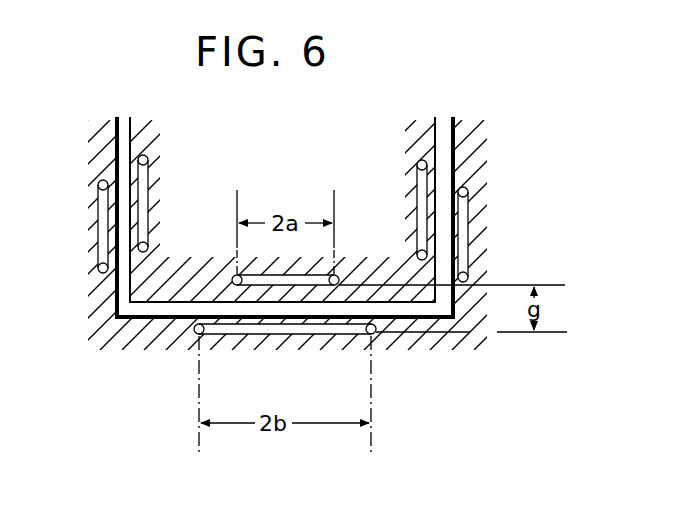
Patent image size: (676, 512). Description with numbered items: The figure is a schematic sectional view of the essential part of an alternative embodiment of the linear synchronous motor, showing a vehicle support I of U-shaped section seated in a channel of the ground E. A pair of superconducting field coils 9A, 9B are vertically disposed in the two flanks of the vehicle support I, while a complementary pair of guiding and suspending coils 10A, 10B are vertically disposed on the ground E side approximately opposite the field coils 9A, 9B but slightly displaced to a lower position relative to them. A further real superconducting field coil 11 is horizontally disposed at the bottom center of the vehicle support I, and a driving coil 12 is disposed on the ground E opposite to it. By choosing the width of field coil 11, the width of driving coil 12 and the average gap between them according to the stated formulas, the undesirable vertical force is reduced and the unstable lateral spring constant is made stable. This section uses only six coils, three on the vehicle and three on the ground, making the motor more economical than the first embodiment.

The field coil 9A is at (150, 208).
The field coil 9B is at (416, 206).
The guiding and suspending coil 10A is at (98, 228).
The guiding and suspending coil 10B is at (469, 246).
The field coil 11 is at (235, 277).
The driving coil 12 is at (198, 336).
The internal core I is at (286, 175).
The ground E is at (334, 382).